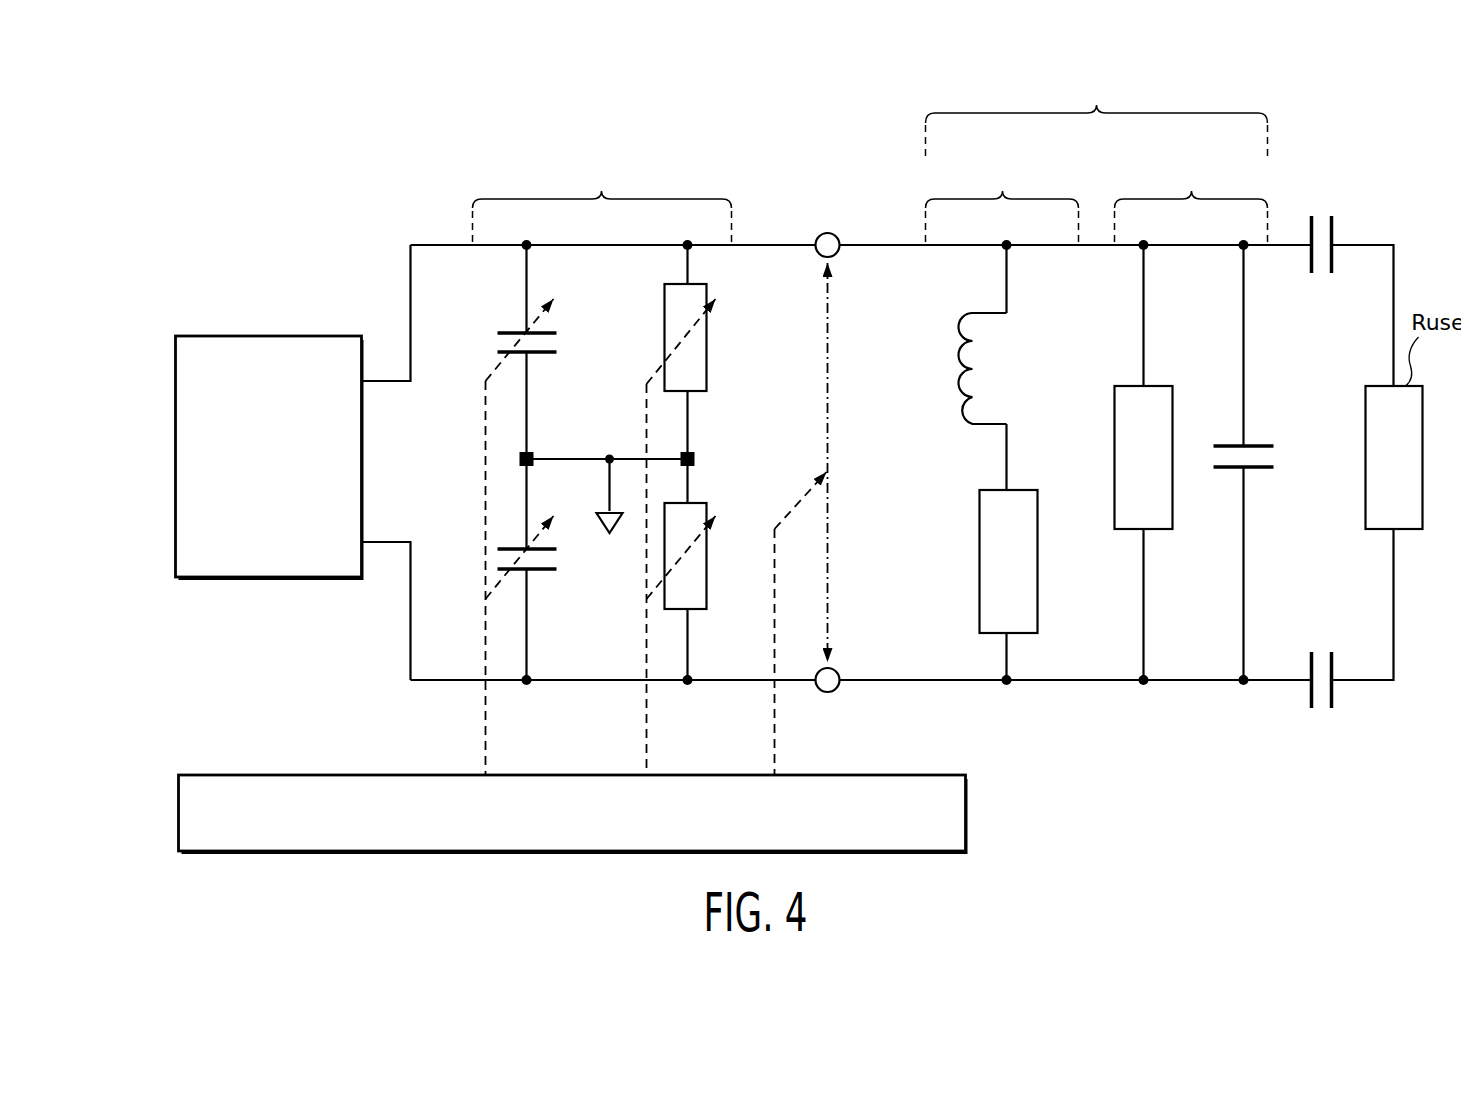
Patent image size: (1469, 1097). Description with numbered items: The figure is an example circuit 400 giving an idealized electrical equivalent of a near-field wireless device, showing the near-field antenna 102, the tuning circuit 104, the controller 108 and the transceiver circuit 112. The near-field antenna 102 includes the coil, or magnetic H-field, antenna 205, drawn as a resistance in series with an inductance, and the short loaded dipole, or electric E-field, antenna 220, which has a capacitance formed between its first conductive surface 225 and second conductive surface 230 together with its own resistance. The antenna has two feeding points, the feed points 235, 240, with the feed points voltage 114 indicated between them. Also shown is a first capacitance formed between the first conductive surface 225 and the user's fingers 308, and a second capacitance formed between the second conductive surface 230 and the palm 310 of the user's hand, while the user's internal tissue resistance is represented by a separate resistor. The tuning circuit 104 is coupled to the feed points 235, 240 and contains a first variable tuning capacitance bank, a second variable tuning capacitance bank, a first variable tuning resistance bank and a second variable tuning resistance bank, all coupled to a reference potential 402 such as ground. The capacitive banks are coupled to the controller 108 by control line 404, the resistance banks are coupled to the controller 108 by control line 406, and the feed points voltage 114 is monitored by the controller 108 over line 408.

The example circuit 400 is at (163, 150).
The transceiver circuit 112 is at (265, 335).
The tuning circuit 104 is at (608, 384).
The control line 404 is at (484, 462).
The control line 406 is at (644, 412).
The line 408 is at (792, 506).
The reference potential 402 is at (610, 540).
The feed point 235 is at (818, 237).
The feed point 240 is at (838, 690).
The feed points voltage 114 is at (827, 348).
The near-field antenna 102 is at (1097, 115).
The coil (H-field) antenna 205 is at (1001, 396).
The short loaded dipole (E-field) antenna 220 is at (1220, 344).
The first conductive surface 225 is at (1308, 232).
The second conductive surface 230 is at (1262, 470).
The user's fingers 308 is at (1333, 228).
The palm 310 is at (1336, 700).
The controller 108 is at (967, 812).